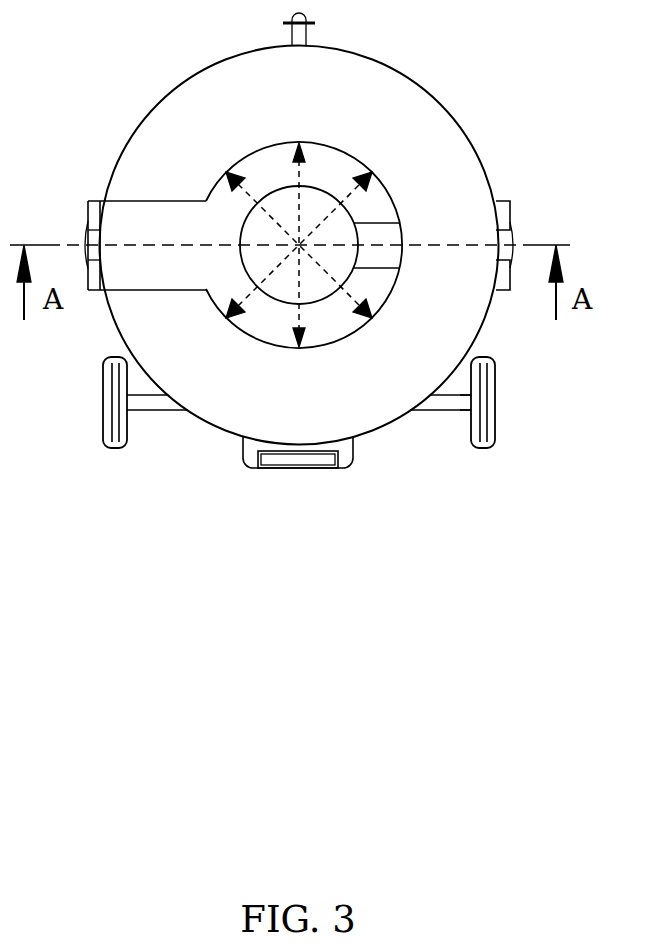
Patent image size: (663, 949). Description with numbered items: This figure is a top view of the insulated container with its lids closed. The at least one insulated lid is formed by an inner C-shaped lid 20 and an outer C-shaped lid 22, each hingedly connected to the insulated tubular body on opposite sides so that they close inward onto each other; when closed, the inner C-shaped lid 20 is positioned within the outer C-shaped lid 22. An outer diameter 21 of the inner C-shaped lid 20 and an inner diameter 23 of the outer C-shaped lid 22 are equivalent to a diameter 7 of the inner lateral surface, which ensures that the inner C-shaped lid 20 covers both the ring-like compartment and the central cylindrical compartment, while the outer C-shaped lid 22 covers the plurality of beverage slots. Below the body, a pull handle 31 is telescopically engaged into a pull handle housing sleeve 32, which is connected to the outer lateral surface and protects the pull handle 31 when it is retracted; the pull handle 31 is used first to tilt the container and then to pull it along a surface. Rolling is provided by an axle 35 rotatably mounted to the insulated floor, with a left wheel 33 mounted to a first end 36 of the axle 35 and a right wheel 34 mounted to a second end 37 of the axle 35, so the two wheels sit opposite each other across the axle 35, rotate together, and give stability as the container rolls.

The outer C-shaped lid 22 is at (203, 74).
The diameter of the inner lateral surface 7 is at (302, 144).
The inner C-shaped lid 20 is at (392, 201).
The outer diameter of the inner C-shaped lid 21 is at (238, 181).
The inner diameter of the outer C-shaped lid 23 is at (251, 291).
The right wheel 34 is at (106, 391).
The second end 37 is at (136, 405).
The left wheel 33 is at (493, 399).
The axle 35 is at (433, 405).
The first end 36 is at (462, 405).
The pull handle housing sleeve 32 is at (256, 456).
The pull handle 31 is at (336, 468).